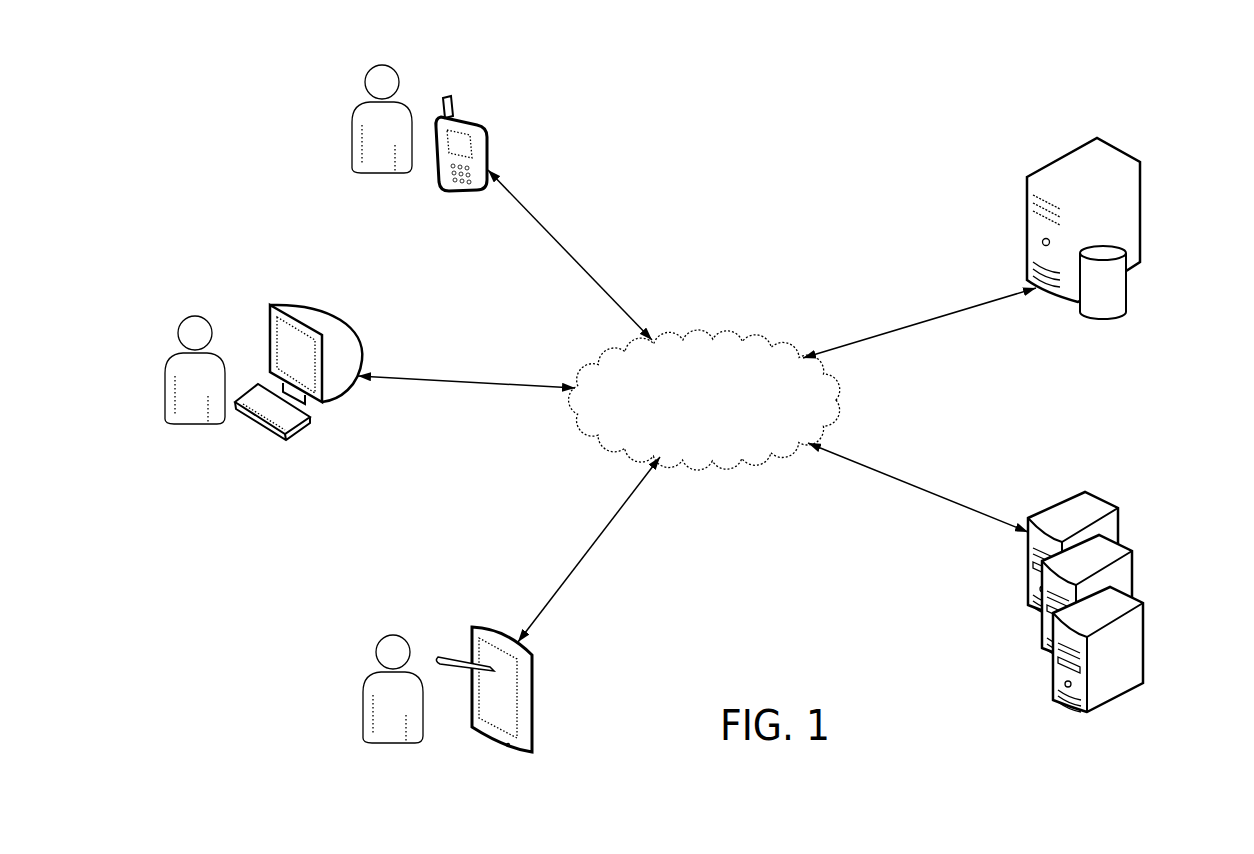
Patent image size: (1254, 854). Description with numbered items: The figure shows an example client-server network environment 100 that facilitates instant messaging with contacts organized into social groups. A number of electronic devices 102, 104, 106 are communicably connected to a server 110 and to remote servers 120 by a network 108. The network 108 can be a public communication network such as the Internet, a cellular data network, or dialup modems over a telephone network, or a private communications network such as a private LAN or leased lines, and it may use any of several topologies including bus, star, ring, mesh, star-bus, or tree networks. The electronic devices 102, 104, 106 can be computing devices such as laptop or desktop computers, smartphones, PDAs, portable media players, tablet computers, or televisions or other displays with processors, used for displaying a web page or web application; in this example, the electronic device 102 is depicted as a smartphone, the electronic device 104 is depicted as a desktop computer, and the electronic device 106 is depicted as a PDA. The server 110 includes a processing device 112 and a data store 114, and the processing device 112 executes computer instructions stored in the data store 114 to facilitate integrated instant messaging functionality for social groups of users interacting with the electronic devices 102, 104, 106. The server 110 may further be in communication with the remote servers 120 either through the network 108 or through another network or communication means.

The network environment 100 is at (817, 106).
The electronic device 102 is at (472, 120).
The electronic device 104 is at (332, 318).
The electronic device 106 is at (481, 623).
The network 108 is at (706, 336).
The server 110 is at (1026, 317).
The processing device 112 is at (1117, 143).
The data store 114 is at (1127, 298).
The remote servers 120 is at (1026, 681).